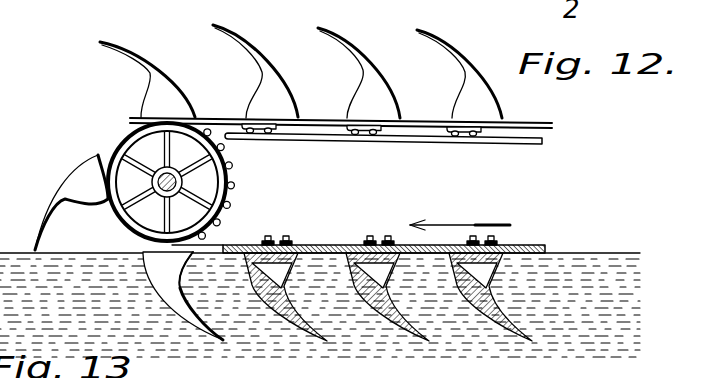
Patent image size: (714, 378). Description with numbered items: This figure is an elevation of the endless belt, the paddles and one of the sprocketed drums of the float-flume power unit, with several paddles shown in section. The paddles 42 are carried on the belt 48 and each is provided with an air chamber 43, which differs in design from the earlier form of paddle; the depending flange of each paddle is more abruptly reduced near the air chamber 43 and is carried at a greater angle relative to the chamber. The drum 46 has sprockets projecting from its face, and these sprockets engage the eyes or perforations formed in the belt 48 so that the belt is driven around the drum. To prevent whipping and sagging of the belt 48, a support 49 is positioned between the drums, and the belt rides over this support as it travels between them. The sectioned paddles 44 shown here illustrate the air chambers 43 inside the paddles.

The paddle 42 is at (267, 82).
The air chamber 43 is at (350, 247).
The curved blade 44 is at (217, 29).
The drum 46 is at (228, 197).
The belt 48 is at (538, 124).
The support 49 is at (420, 140).